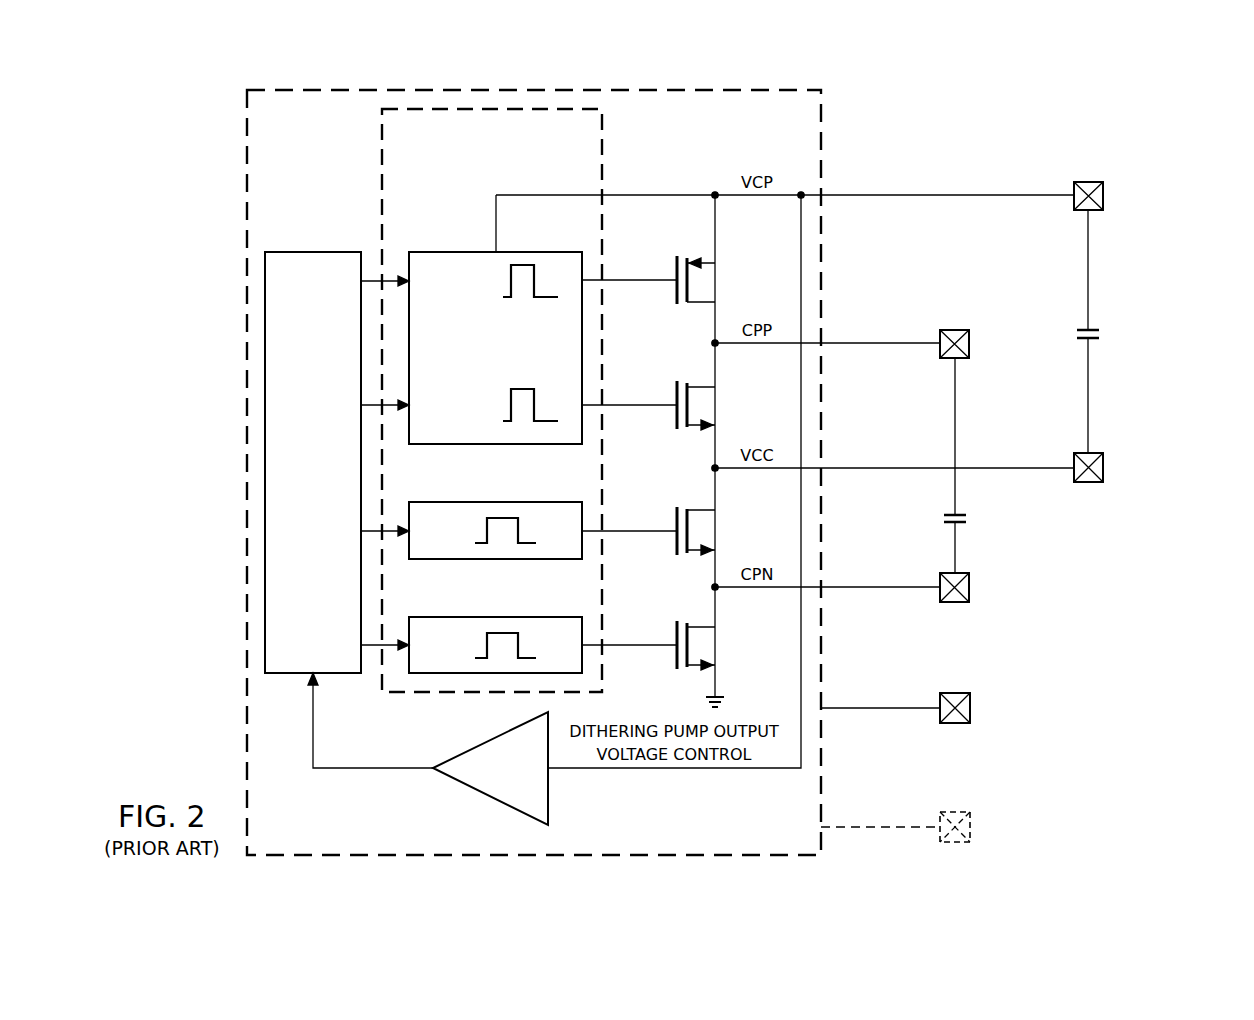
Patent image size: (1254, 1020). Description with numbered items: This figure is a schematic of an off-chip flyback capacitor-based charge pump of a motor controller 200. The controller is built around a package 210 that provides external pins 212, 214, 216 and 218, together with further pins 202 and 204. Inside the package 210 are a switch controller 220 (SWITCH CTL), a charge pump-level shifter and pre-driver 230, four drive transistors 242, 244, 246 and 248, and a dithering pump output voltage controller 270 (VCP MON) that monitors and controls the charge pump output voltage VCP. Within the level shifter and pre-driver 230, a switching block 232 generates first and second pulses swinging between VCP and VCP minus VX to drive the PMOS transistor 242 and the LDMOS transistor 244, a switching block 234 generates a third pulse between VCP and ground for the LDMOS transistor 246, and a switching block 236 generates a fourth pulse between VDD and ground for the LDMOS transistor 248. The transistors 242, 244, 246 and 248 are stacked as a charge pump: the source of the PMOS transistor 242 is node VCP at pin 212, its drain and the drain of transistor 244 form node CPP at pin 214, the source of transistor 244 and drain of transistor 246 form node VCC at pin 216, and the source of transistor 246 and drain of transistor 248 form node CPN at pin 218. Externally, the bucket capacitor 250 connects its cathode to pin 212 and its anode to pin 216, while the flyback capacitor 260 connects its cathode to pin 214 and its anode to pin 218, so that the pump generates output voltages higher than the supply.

The motor controller 200 is at (922, 116).
The package 210 is at (240, 151).
The switch controller 220 is at (303, 252).
The charge pump-level shifter and pre-driver 230 is at (374, 159).
The switching block 232 is at (461, 252).
The switching block 234 is at (477, 559).
The switching block 236 is at (514, 617).
The PMOS drive transistor 242 is at (675, 269).
The LDMOS drive transistor 244 is at (675, 395).
The LDMOS drive transistor 246 is at (675, 543).
The LDMOS drive transistor 248 is at (675, 658).
The bucket capacitor 250 is at (1076, 335).
The flyback capacitor 260 is at (944, 517).
The dithering pump output voltage controller 270 is at (490, 800).
The VCC pin 202 is at (970, 715).
The VDD pin 204 is at (970, 835).
The pin 212 is at (1103, 190).
The pin 214 is at (969, 350).
The pin 216 is at (1103, 476).
The pin 218 is at (969, 595).